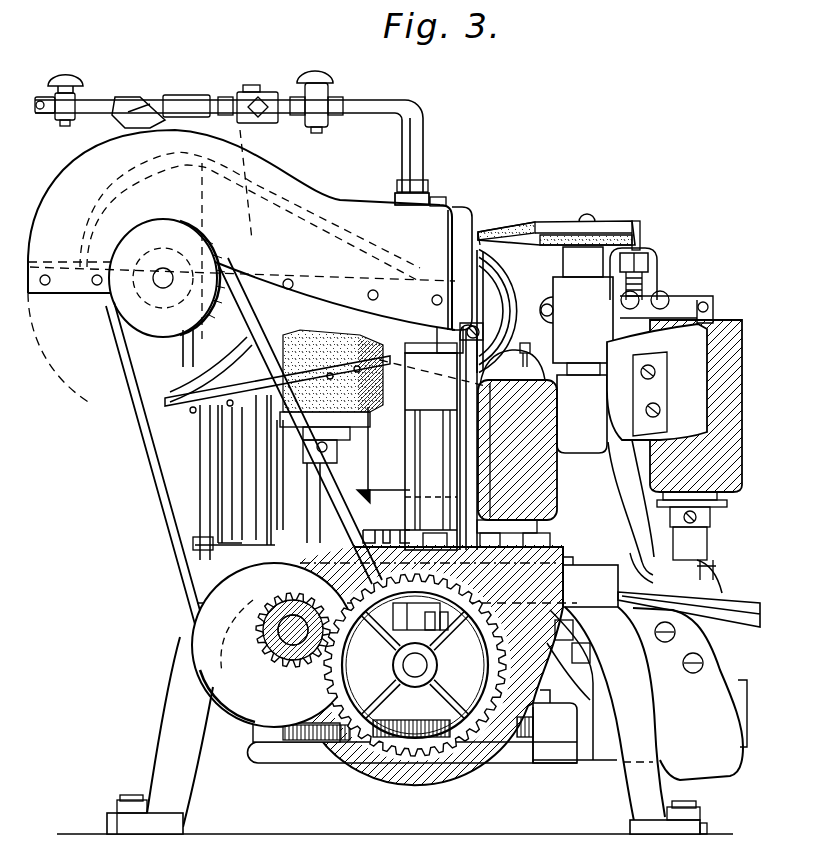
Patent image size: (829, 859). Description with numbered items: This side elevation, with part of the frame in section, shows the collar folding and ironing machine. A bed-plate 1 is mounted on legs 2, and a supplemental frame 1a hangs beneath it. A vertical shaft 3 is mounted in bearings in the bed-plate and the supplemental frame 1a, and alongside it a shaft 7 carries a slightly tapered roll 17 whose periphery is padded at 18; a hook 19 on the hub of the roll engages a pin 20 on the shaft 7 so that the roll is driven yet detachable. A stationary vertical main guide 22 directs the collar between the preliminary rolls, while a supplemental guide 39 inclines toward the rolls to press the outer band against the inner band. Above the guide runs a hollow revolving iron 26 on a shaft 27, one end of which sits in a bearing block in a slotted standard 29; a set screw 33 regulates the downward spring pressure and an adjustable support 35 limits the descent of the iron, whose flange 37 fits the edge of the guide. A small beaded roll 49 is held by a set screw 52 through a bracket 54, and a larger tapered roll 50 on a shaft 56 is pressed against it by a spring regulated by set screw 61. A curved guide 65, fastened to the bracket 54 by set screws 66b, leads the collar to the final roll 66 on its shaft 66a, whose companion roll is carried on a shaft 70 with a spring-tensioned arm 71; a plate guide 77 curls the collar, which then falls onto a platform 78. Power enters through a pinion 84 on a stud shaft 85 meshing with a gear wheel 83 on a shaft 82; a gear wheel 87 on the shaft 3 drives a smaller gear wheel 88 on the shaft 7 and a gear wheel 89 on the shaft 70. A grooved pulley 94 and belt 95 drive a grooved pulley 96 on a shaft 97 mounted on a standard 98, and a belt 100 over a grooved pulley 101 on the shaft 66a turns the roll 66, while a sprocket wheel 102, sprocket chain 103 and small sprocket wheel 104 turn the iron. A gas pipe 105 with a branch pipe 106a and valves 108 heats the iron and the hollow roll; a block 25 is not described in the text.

The bed-plate 1 is at (67, 487).
The supplemental frame 1a is at (307, 753).
The legs 2 is at (167, 718).
The vertical shaft 3 is at (410, 510).
The shaft 7 is at (315, 503).
The tapered roll 17 is at (372, 424).
The padding 18 is at (333, 371).
The hook 19 is at (323, 477).
The pin 20 is at (317, 452).
The main guide 22 is at (483, 397).
The block 25 is at (513, 363).
The hollow revolving iron 26 is at (507, 267).
The shaft 27 is at (517, 290).
The standard 29 is at (423, 460).
The set screw 33 is at (430, 200).
The adjustable support 35 is at (480, 313).
The flange 37 is at (503, 245).
The supplemental guide 39 is at (367, 453).
The beaded roll 49 is at (633, 470).
The roll 50 is at (742, 443).
The set screw 52 is at (647, 263).
The bracket 54 is at (713, 317).
The shaft 56 is at (730, 527).
The set screw 61 is at (490, 463).
The curved guide 65 is at (690, 382).
The final folding roll 66 is at (587, 457).
The shaft 66a is at (593, 220).
The set screws 66b is at (667, 292).
The shaft 70 is at (420, 715).
The arm 71 is at (440, 630).
The plate guide 77 is at (676, 573).
The platform 78 is at (727, 603).
The shaft 82 is at (415, 665).
The gear wheel 83 is at (450, 740).
The pinion 84 is at (293, 630).
The stud shaft 85 is at (277, 653).
The gear wheel 87 is at (410, 747).
The gear wheel 88 is at (350, 742).
The gear wheel 89 is at (533, 713).
The grooved pulley 94 is at (207, 633).
The belt 95 is at (180, 527).
The grooved pulley 96 is at (143, 230).
The shaft 97 is at (157, 289).
The standard 98 is at (217, 477).
The belt 100 is at (490, 230).
The grooved pulley 101 is at (633, 233).
The sprocket wheel 102 is at (167, 397).
The sprocket chain 103 is at (123, 380).
The sprocket wheel 104 is at (380, 330).
The gas pipe 105 is at (113, 100).
The branch pipe 106a is at (420, 147).
The valves 108 is at (72, 82).